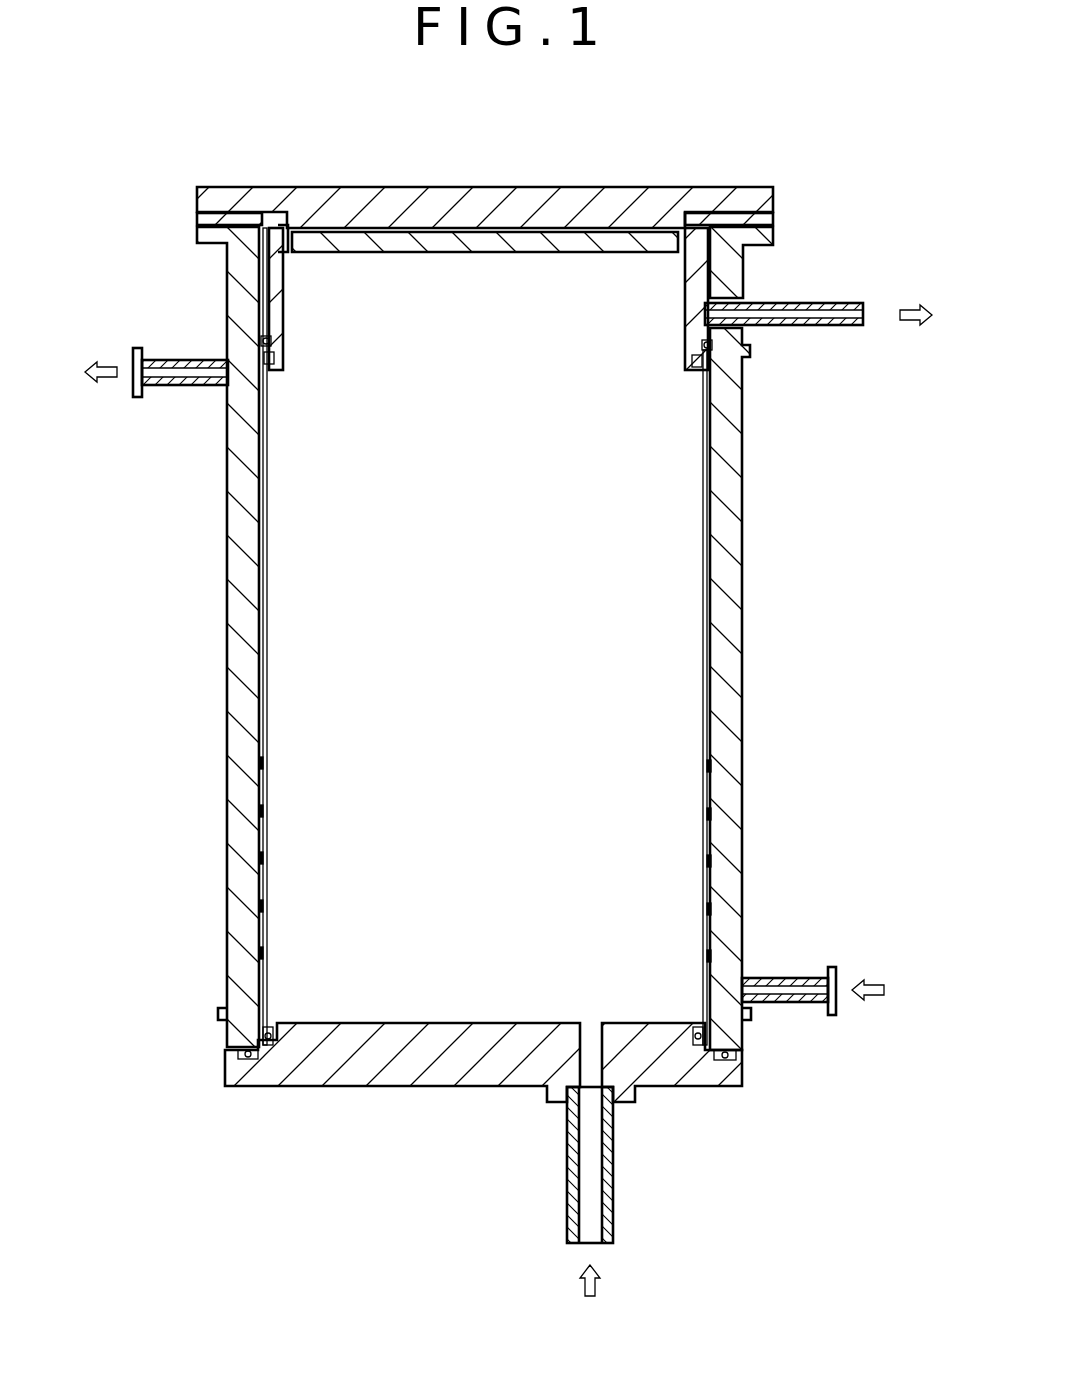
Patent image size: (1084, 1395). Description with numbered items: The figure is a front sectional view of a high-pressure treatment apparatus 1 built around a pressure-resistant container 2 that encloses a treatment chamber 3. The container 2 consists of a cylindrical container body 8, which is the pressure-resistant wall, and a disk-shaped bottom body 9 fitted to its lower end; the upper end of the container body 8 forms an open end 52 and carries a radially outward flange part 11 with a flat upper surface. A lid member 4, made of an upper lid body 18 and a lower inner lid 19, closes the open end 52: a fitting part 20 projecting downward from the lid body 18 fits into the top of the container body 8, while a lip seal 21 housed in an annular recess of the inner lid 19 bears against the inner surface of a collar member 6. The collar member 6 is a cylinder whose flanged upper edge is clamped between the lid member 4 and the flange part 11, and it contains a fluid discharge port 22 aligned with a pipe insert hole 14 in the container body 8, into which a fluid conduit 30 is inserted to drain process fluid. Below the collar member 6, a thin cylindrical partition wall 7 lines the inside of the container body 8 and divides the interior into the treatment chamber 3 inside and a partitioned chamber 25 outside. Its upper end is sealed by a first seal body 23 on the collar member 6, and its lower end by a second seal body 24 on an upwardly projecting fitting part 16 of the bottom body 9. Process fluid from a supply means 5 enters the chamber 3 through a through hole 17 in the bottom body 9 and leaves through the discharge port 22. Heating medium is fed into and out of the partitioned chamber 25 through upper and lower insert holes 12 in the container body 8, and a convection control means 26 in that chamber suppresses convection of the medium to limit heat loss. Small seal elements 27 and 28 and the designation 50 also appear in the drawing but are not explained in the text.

The high-pressure treatment apparatus 1 is at (737, 150).
The pressure-resistant container 2 is at (818, 518).
The treatment chamber 3 is at (498, 591).
The lid member 4 is at (624, 205).
The supply means 5 is at (642, 1195).
The collar member 6 is at (272, 296).
The partition wall 7 is at (712, 622).
The container body 8 is at (728, 690).
The bottom body 9 is at (680, 1070).
The flange part 11 is at (752, 248).
The insert hole 12 is at (228, 386).
The pipe insert hole 14 is at (748, 340).
The fitting part 16 is at (222, 1012).
The through hole 17 is at (576, 1087).
The lid body 18 is at (390, 205).
The inner lid 19 is at (522, 242).
The fitting part 20 is at (281, 215).
The lip seal 21 is at (255, 232).
The fluid discharge port 22 is at (700, 318).
The first seal body 23 is at (274, 360).
The second seal body 24 is at (270, 1027).
The partitioned chamber 25 is at (262, 716).
The convection control means 26 is at (260, 860).
The seal ring 27 is at (273, 341).
The seal ring 28 is at (742, 1060).
The fluid conduit 30 is at (856, 302).
The heater 50 is at (712, 906).
The open end 52 is at (222, 215).